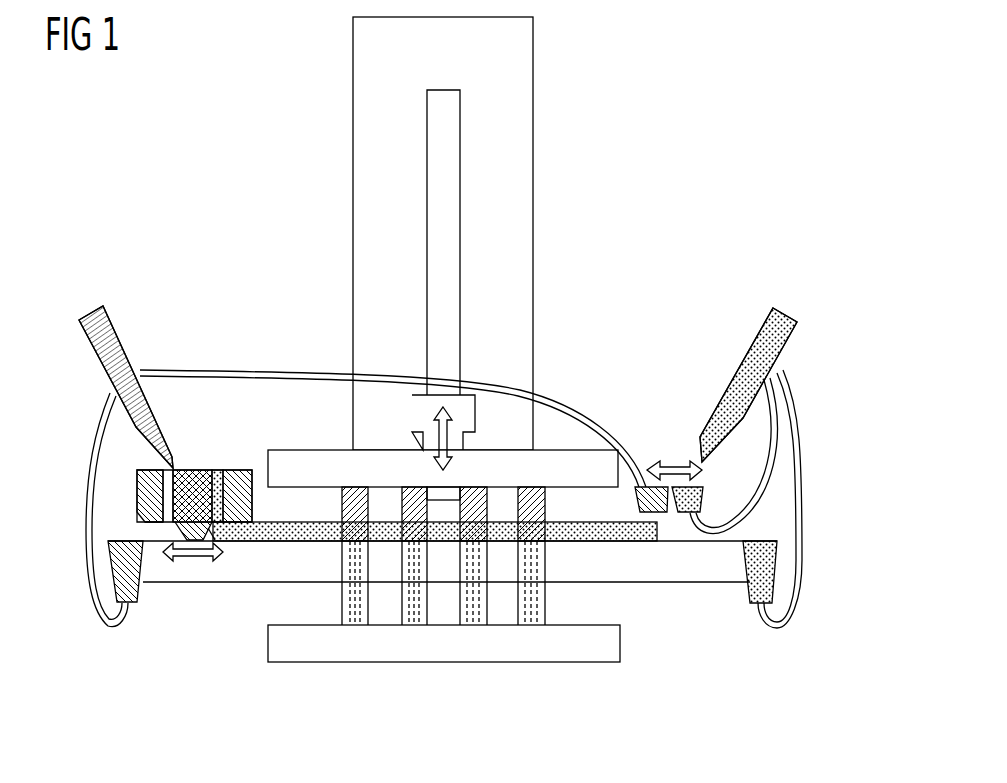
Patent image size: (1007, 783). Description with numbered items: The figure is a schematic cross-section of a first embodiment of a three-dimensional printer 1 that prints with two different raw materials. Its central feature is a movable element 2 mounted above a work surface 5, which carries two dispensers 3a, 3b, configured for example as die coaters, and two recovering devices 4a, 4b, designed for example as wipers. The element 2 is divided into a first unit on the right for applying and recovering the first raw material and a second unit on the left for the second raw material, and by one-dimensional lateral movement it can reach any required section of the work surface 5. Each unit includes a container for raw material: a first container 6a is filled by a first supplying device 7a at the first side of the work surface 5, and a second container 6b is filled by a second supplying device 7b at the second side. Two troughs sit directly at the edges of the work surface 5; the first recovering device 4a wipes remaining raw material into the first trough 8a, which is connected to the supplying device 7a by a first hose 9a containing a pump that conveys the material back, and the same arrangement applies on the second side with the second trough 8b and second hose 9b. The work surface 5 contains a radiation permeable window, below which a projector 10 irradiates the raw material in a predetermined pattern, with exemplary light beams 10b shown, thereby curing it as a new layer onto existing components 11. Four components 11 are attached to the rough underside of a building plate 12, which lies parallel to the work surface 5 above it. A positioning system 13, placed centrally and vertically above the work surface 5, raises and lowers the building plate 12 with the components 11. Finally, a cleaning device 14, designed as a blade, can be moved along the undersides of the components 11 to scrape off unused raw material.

The 3D printer 1 is at (178, 138).
The movable element 2 is at (190, 445).
The first dispenser 3a is at (215, 530).
The second dispenser 3b is at (163, 520).
The first recovering device 4a is at (205, 540).
The second recovering device 4b is at (196, 470).
The work surface 5 is at (670, 573).
The first container 6a is at (216, 470).
The second container 6b is at (160, 462).
The first supplying device 7a is at (748, 312).
The second supplying device 7b is at (132, 312).
The first trough 8a is at (755, 562).
The second trough 8b is at (116, 568).
The first hose 9a is at (800, 467).
The second hose 9b is at (231, 370).
The projector 10 is at (622, 648).
The light beams 10b is at (407, 637).
The components 11 is at (385, 505).
The building plate 12 is at (318, 465).
The positioning system 13 is at (552, 228).
The cleaning device 14 is at (658, 445).